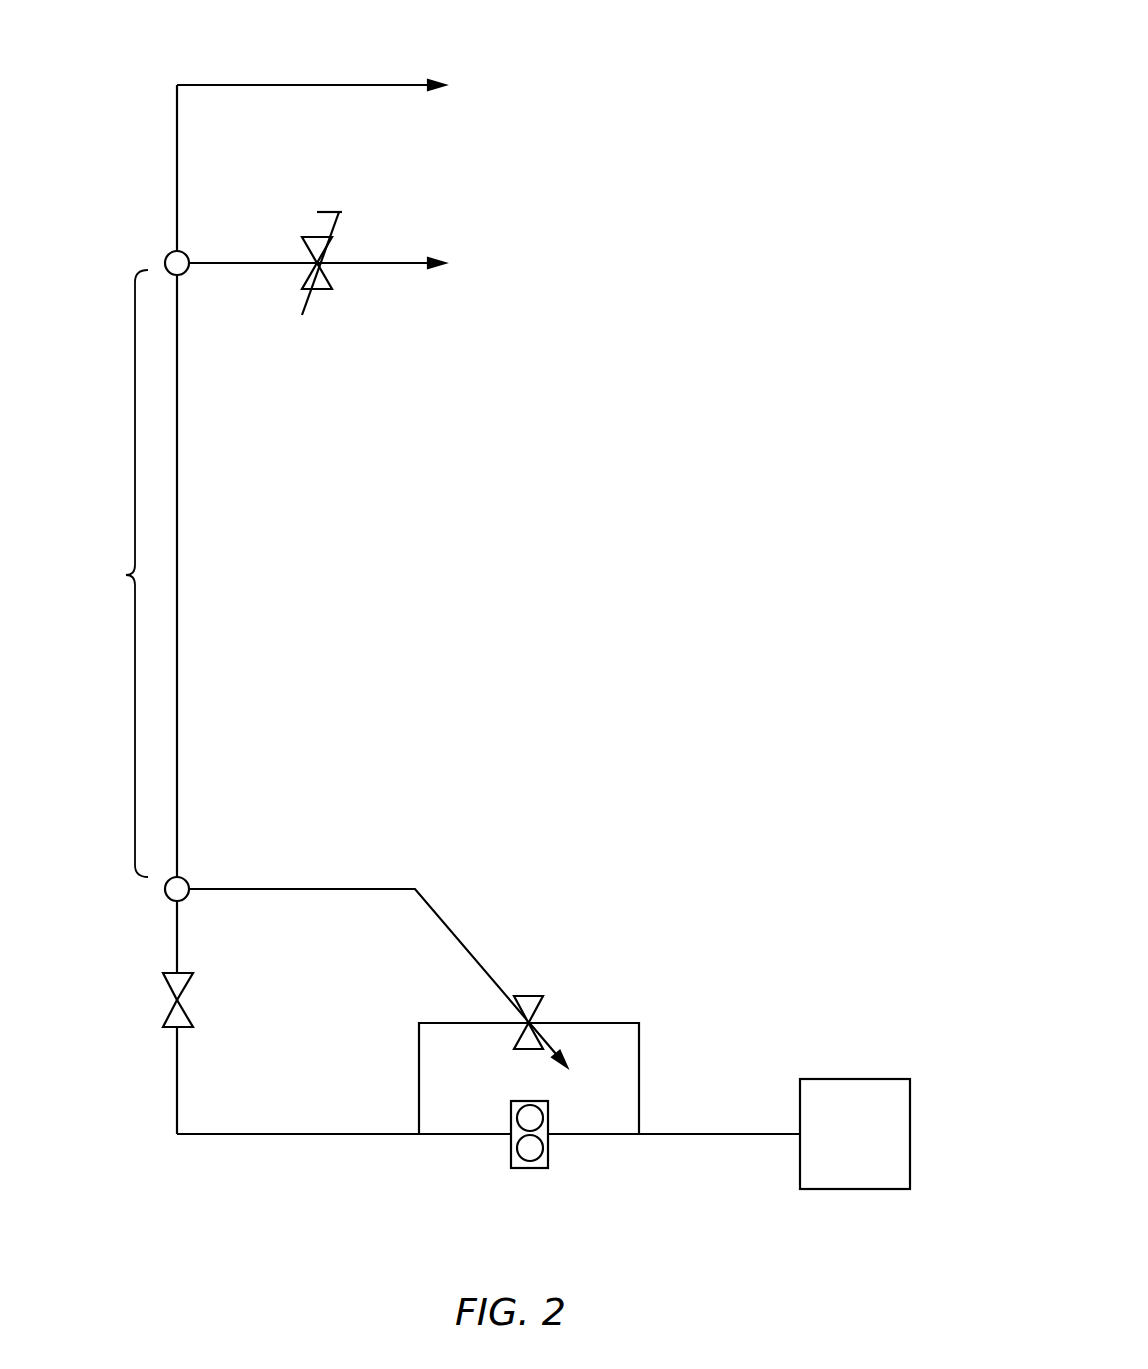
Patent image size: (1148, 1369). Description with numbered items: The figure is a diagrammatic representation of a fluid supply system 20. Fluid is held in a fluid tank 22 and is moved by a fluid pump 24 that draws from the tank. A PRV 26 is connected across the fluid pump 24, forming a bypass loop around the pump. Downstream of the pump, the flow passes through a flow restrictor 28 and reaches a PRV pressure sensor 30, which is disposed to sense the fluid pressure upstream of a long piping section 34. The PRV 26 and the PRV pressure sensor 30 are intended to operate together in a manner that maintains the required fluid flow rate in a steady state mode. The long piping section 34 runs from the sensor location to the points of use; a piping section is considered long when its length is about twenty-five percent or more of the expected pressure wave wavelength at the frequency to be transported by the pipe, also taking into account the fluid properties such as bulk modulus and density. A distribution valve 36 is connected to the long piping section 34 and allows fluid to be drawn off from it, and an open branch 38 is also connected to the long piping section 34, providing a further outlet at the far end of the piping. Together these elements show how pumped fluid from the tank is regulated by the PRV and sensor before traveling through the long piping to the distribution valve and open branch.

The fluid supply system 20 is at (739, 223).
The fluid tank 22 is at (840, 1150).
The fluid pump 24 is at (525, 1170).
The PRV 26 is at (530, 994).
The flow restrictor 28 is at (168, 1000).
The PRV pressure sensor 30 is at (167, 892).
The long piping section 34 is at (118, 573).
The distribution valve 36 is at (320, 265).
The open branch 38 is at (312, 84).